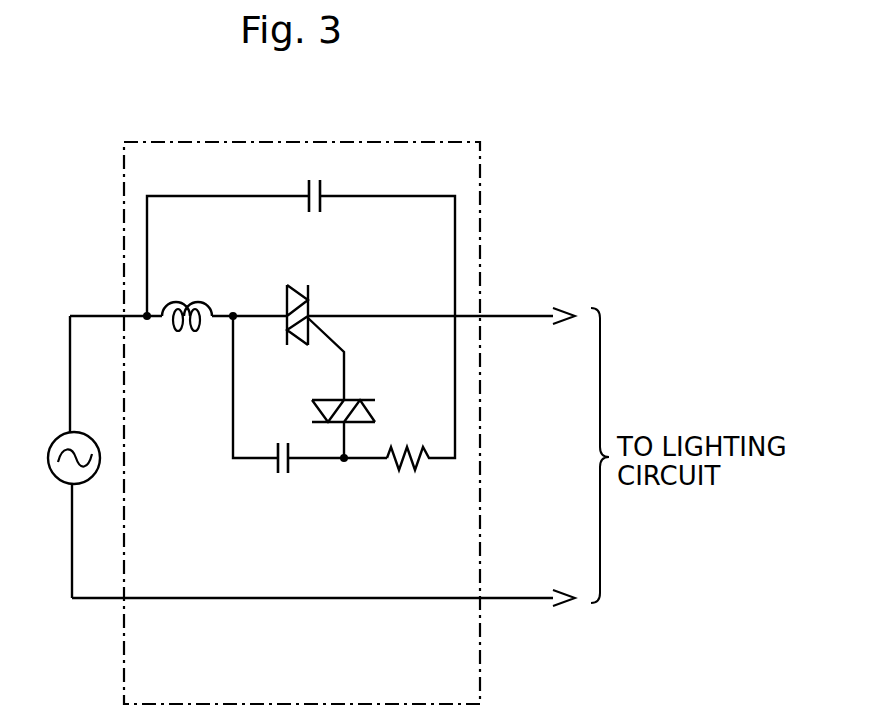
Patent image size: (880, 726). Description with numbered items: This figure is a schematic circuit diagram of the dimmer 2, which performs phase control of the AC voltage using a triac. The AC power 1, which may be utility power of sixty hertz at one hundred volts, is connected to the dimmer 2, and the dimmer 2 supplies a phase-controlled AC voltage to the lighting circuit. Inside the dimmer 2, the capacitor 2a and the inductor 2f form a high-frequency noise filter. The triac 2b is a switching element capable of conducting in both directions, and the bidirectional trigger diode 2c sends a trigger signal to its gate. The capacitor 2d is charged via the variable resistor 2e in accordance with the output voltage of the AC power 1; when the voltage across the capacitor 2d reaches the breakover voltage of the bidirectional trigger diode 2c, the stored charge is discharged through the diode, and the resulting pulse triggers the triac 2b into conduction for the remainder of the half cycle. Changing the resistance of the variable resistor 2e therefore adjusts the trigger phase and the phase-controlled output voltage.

The AC power 1 is at (50, 445).
The dimmer 2 is at (158, 142).
The capacitor 2a is at (322, 186).
The triac 2b is at (309, 310).
The bidirectional trigger diode 2c is at (352, 397).
The capacitor 2d is at (283, 440).
The variable resistor 2e is at (400, 445).
The inductor 2f is at (185, 302).